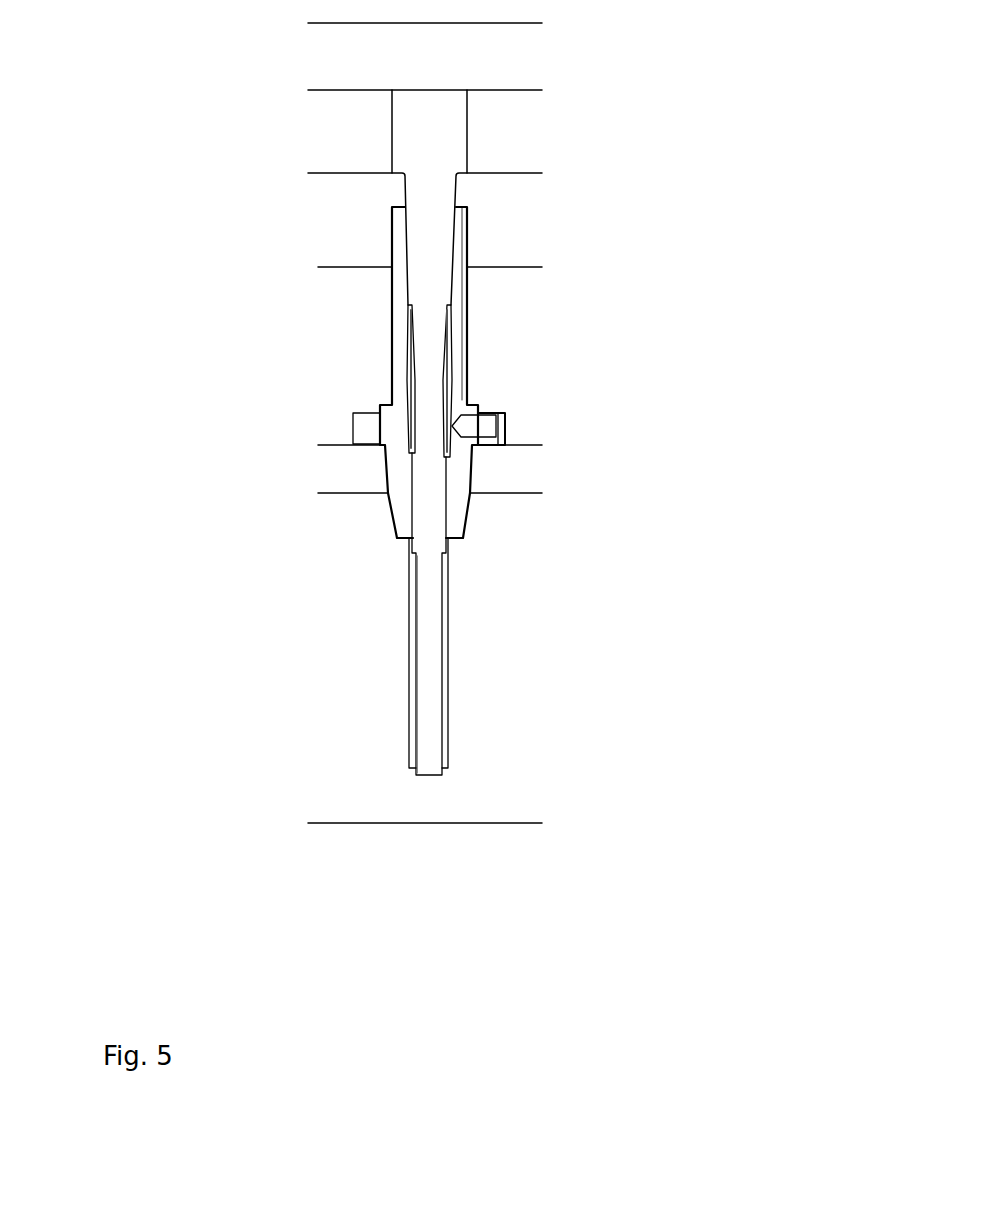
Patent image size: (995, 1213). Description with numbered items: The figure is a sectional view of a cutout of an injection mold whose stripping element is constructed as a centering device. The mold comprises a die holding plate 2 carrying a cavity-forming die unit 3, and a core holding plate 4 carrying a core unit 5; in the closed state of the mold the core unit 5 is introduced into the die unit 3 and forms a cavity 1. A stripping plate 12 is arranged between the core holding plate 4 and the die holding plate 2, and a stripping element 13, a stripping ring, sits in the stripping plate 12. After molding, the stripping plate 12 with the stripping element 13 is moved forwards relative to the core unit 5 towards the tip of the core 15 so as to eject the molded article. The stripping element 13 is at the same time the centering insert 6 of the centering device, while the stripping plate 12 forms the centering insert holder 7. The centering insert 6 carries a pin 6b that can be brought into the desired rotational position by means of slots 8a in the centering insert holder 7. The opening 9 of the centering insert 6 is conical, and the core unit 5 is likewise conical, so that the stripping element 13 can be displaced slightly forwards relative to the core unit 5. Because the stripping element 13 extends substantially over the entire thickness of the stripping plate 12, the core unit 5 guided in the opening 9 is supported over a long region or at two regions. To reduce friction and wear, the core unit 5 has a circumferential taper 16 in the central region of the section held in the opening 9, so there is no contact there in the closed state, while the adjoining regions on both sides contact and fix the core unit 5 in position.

The cavity 1 is at (447, 720).
The die holding plate 2 is at (258, 495).
The die unit 3 is at (477, 563).
The core holding plate 4 is at (258, 20).
The core unit 5 is at (438, 189).
The centering insert 6 is at (625, 372).
The pin 6b is at (485, 423).
The centering insert holder 7 is at (345, 399).
The slots 8a is at (362, 423).
The opening 9 is at (455, 255).
The stripping plate 12 is at (258, 275).
The stripping element 13 is at (457, 368).
The tip of the core 15 is at (432, 760).
The circumferential taper 16 is at (448, 333).